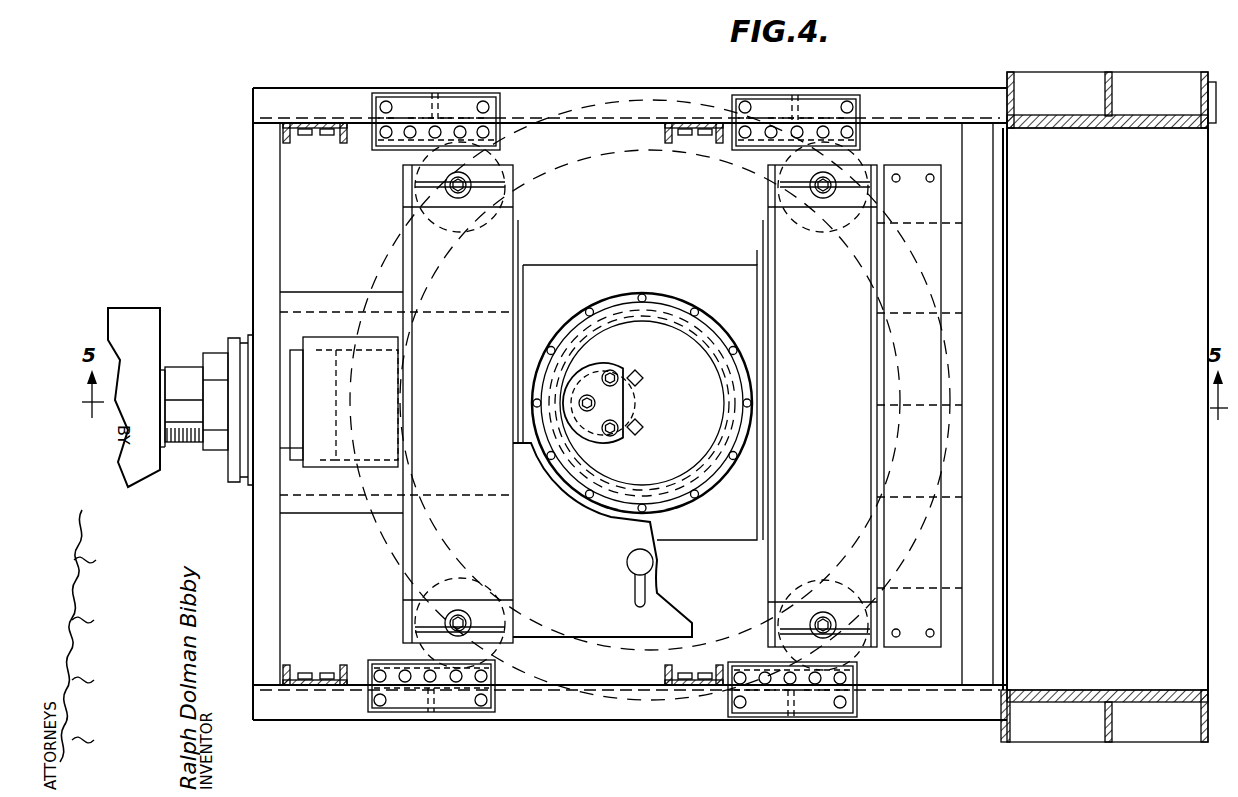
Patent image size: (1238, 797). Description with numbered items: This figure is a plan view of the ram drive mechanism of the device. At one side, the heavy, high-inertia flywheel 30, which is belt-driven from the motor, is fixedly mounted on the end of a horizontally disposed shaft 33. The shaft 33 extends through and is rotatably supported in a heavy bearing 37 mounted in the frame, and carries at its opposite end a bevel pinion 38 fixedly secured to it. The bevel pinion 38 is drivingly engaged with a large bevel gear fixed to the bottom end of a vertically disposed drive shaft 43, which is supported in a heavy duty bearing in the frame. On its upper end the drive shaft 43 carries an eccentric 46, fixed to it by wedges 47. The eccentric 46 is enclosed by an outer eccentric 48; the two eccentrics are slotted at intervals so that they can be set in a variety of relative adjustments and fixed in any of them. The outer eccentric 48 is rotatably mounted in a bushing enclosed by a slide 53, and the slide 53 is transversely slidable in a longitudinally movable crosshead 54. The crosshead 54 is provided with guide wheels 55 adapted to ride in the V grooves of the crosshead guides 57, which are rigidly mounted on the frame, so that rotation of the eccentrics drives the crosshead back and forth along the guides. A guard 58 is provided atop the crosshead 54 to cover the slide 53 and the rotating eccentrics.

The flywheel 30 is at (148, 316).
The shaft 33 is at (168, 378).
The bearing 37 is at (208, 368).
The bevel pinion 38 is at (356, 320).
The drive shaft 43 is at (642, 396).
The eccentric 46 is at (666, 362).
The wedges 47 is at (642, 376).
The outer eccentric 48 is at (719, 450).
The slide 53 is at (736, 305).
The crosshead 54 is at (826, 280).
The guide wheels 55 is at (860, 165).
The crosshead guides 57 is at (814, 102).
The guard 58 is at (582, 577).